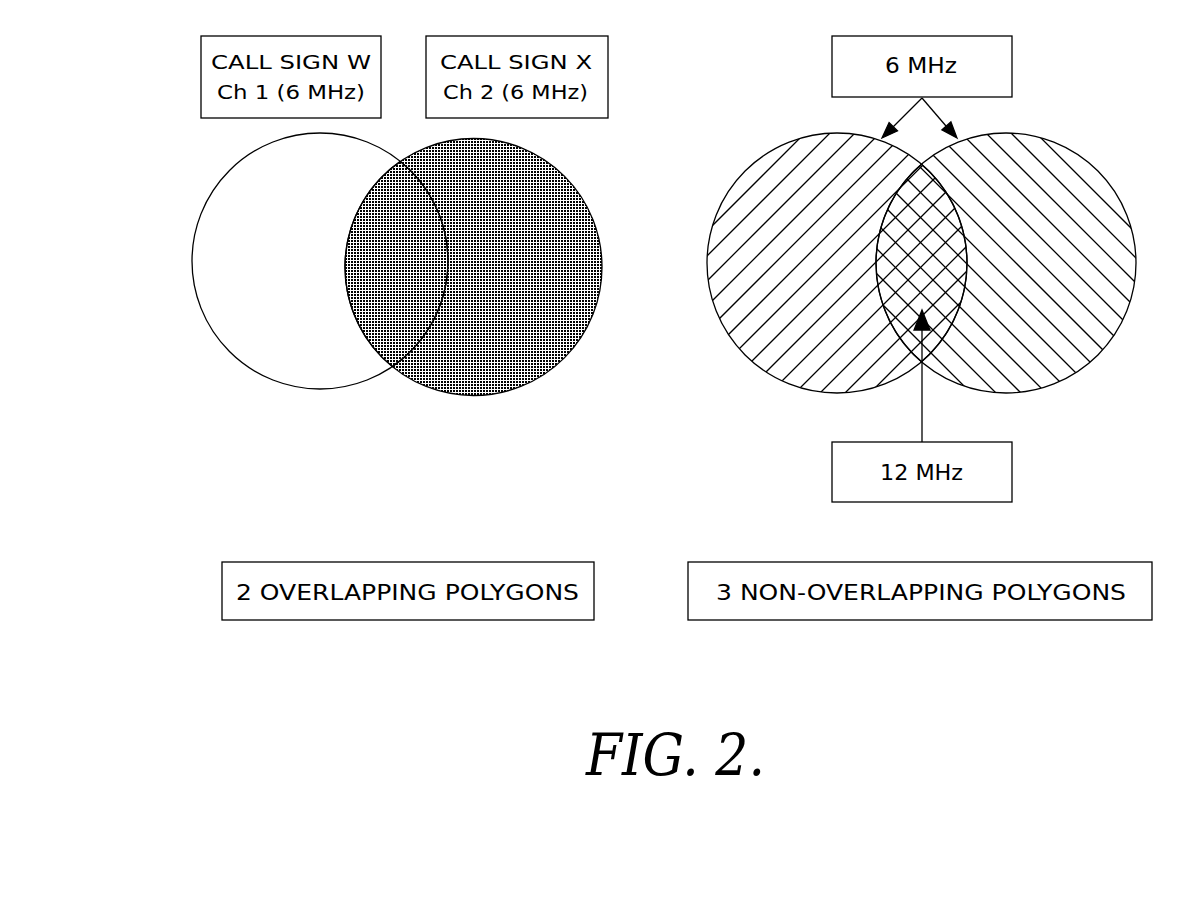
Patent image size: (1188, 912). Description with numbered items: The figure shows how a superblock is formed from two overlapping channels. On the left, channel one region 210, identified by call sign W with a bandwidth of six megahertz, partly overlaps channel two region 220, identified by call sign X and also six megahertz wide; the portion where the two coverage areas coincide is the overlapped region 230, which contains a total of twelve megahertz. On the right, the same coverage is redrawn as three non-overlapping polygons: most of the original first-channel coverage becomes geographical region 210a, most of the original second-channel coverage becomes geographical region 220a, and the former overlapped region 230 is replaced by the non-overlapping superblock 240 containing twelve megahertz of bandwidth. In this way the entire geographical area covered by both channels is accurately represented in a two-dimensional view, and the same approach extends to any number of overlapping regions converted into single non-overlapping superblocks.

The channel 1 region 210 is at (303, 380).
The channel 2 region 220 is at (502, 382).
The overlapped region 230 is at (413, 350).
The geographical region 210a is at (715, 255).
The geographical region 220a is at (1048, 378).
The superblock 240 is at (938, 192).